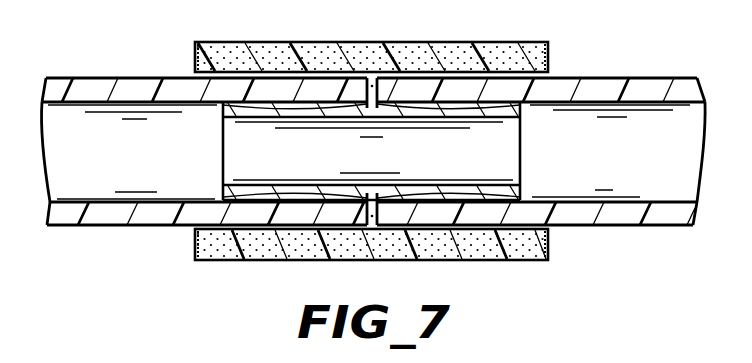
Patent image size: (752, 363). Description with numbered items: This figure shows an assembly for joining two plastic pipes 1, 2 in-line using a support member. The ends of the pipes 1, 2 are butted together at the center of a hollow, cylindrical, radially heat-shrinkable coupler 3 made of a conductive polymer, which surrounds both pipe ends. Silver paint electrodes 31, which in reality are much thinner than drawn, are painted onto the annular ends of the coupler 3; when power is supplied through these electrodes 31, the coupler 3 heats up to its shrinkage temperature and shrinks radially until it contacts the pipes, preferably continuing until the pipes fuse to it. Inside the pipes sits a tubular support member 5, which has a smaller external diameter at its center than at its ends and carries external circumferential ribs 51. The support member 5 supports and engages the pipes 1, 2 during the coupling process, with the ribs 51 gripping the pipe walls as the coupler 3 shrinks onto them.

The plastic pipe 1 is at (143, 217).
The plastic pipe 2 is at (593, 216).
The coupler 3 is at (400, 53).
The silver paint electrodes 31 is at (195, 63).
The tubular support member 5 is at (495, 107).
The external circumferential ribs 51 is at (327, 107).